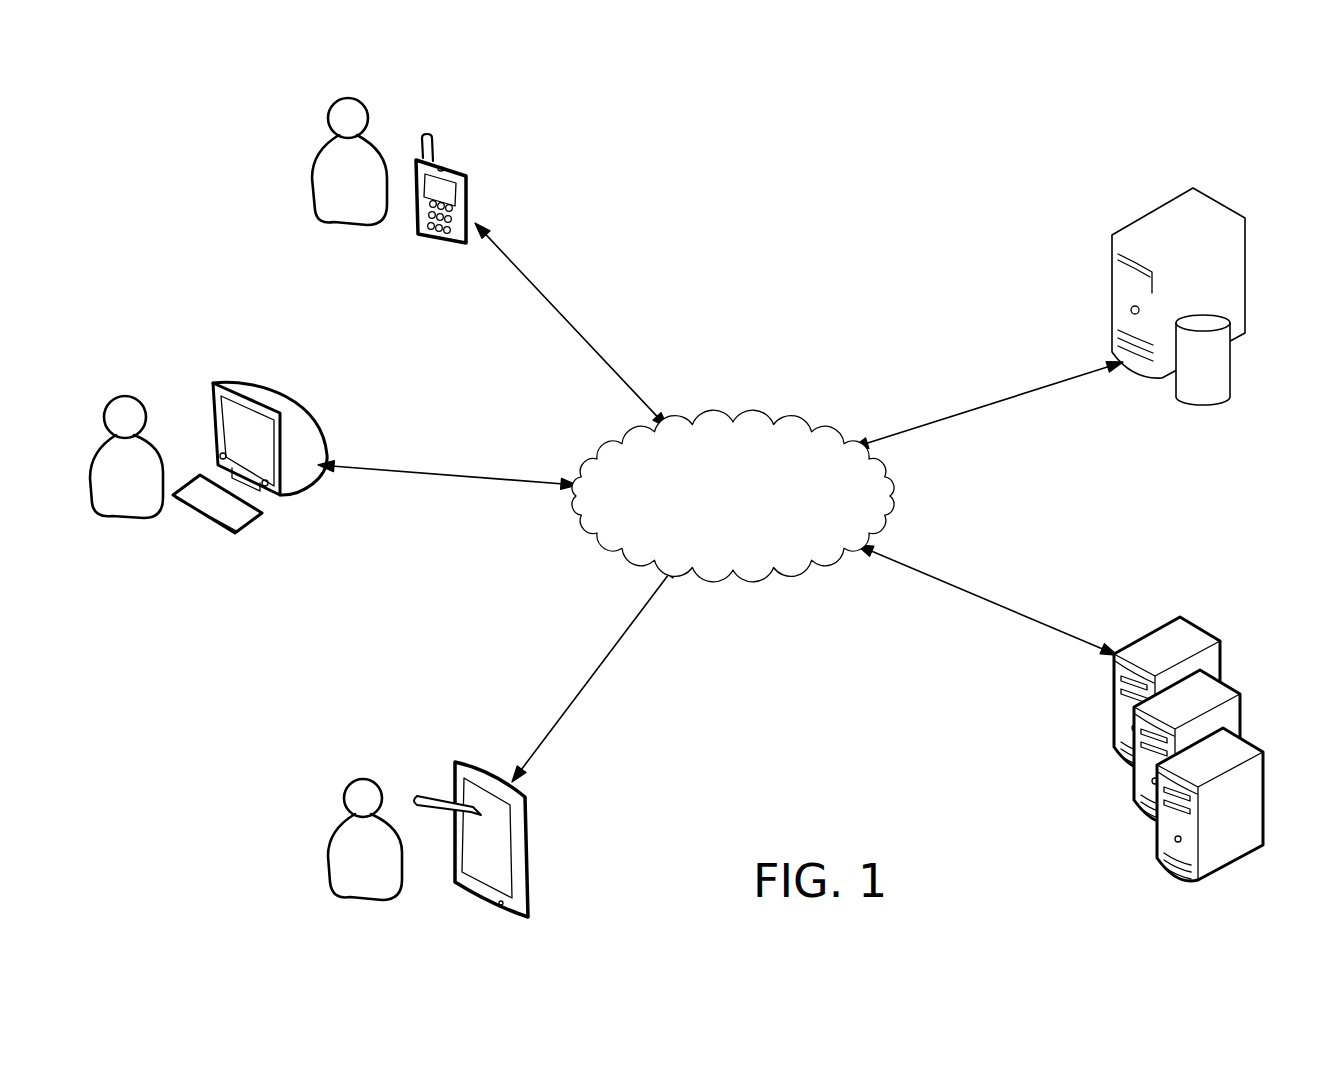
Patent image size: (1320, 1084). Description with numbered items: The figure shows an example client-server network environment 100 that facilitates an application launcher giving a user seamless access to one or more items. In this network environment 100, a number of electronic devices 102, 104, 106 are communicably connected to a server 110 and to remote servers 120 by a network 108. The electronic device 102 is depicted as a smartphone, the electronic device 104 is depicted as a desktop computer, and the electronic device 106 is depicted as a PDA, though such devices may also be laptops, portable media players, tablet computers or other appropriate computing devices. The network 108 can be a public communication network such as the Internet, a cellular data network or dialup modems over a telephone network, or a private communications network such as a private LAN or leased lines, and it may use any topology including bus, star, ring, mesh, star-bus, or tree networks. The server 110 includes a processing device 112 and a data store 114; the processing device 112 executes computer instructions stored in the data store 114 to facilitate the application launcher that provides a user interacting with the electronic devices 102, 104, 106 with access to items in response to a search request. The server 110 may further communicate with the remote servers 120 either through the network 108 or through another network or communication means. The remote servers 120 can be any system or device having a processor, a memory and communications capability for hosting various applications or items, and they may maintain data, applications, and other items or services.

The network environment 100 is at (859, 156).
The electronic device 102 is at (458, 158).
The electronic device 104 is at (288, 395).
The electronic device 106 is at (465, 758).
The network 108 is at (730, 423).
The server 110 is at (1189, 285).
The processing device 112 is at (1217, 198).
The data store 114 is at (1232, 378).
The remote servers 120 is at (1113, 840).